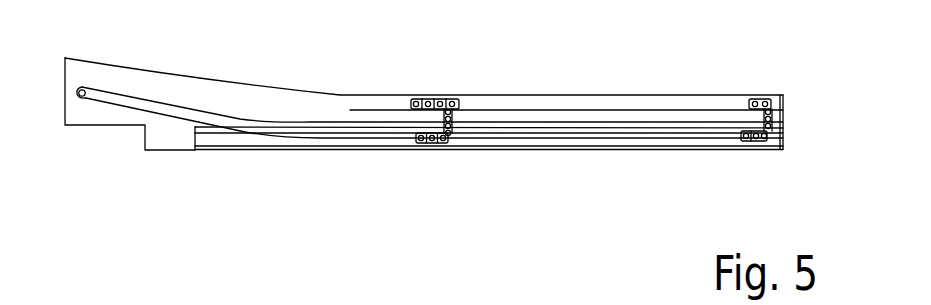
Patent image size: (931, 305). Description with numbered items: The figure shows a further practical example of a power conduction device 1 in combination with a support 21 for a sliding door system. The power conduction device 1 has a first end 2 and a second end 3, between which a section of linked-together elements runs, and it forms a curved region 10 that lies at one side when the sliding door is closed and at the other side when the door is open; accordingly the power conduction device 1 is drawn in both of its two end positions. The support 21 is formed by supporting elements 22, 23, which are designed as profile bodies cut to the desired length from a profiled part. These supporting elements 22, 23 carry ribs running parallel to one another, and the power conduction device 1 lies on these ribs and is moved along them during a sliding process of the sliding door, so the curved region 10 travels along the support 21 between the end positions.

The power conduction device 1 is at (535, 108).
The first end 2 is at (413, 99).
The second end 3 is at (80, 97).
The curved region 10 is at (455, 141).
The support 21 is at (535, 146).
The supporting element 22 is at (207, 138).
The supporting element 23 is at (777, 97).